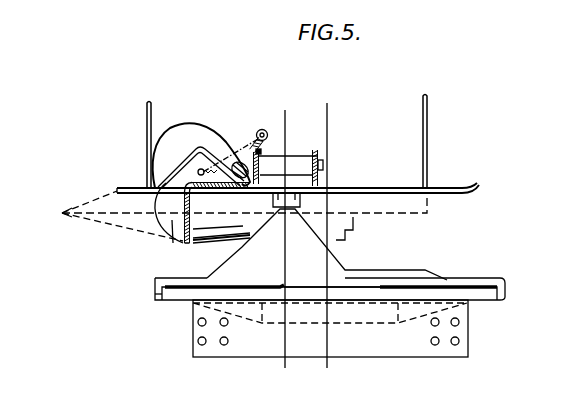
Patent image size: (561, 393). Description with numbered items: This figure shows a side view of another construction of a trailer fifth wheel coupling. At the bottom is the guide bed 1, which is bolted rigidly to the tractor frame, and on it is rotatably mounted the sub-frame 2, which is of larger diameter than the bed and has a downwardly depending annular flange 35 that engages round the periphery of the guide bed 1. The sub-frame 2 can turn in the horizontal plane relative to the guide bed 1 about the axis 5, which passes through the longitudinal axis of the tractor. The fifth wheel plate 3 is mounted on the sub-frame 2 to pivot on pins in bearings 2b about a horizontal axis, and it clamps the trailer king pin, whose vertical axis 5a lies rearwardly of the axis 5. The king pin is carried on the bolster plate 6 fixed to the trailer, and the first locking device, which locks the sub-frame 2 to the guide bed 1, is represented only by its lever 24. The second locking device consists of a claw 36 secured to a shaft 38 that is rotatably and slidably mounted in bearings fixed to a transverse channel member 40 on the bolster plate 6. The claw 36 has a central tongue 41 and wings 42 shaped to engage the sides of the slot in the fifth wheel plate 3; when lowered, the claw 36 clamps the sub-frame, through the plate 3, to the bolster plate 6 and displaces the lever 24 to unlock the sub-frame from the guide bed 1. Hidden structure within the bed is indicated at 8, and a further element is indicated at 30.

The guide bed 1 is at (188, 296).
The sub-frame 2 is at (447, 282).
The bearings 2b is at (338, 263).
The fifth wheel plate 3 is at (113, 219).
The axis 5 is at (328, 146).
The vertical axis of the king pin 5a is at (262, 165).
The bolster plate 6 is at (144, 191).
The hidden brace 8 is at (348, 313).
The lever 24 is at (222, 228).
The strap 30 is at (188, 250).
The annular flange 35 is at (160, 294).
The claw 36 is at (175, 139).
The shaft 38 is at (259, 140).
The transverse channel member 40 is at (267, 183).
The central tongue 41 is at (192, 208).
The wings 42 is at (164, 241).